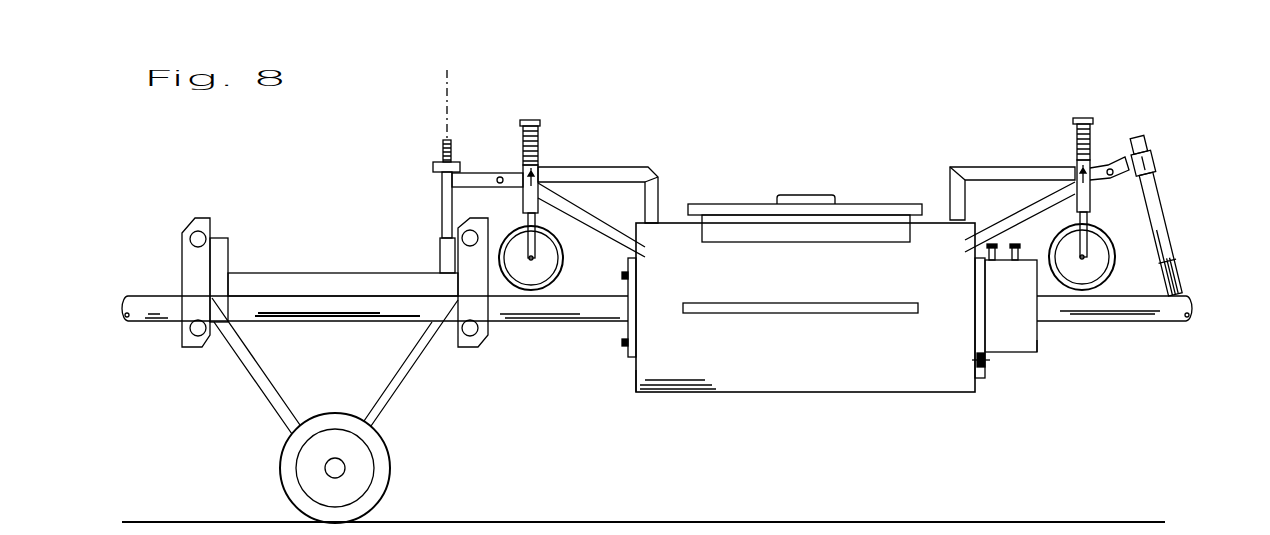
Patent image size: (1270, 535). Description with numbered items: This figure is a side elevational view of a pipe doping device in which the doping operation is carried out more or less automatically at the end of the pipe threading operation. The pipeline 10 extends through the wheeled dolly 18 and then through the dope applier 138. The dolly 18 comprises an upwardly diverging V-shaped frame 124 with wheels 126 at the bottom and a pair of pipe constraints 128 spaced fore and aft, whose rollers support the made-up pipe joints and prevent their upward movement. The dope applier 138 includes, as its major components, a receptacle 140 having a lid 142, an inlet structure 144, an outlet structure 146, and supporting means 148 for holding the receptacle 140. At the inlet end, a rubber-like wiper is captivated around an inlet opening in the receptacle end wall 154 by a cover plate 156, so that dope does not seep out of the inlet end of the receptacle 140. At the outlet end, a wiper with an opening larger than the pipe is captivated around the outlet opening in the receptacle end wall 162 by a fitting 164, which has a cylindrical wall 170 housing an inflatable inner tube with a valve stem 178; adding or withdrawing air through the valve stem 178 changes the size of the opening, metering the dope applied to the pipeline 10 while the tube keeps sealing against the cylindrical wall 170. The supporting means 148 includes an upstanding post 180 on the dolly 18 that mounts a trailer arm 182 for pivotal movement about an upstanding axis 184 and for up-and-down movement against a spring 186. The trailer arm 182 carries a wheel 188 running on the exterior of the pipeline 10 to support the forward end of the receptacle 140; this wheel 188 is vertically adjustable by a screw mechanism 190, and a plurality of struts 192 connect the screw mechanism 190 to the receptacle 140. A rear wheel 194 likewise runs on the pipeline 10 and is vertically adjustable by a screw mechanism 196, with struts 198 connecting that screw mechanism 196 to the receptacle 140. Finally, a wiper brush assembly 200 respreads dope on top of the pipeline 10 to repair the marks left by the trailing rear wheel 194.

The pipeline 10 is at (138, 290).
The wheeled dolly 18 is at (300, 230).
The V-shaped frame 124 is at (250, 385).
The wheels 126 is at (278, 468).
The pipe constraints 128 is at (203, 207).
The dope applier 138 is at (871, 120).
The receptacle 140 is at (753, 385).
The lid 142 is at (746, 203).
The inlet structure 144 is at (620, 347).
The outlet structure 146 is at (1042, 340).
The supporting means 148 is at (676, 128).
The receptacle end wall 154 is at (634, 375).
The cover plate 156 is at (620, 327).
The receptacle end wall 162 is at (983, 385).
The fitting 164 is at (1006, 378).
The cylindrical wall 170 is at (1010, 340).
The valve stem 178 is at (1023, 252).
The upstanding post 180 is at (447, 203).
The trailer arm 182 is at (487, 172).
The upstanding axis 184 is at (450, 92).
The spring 186 is at (436, 152).
The wheel 188 is at (563, 243).
The screw mechanism 190 is at (540, 147).
The struts 192 is at (626, 175).
The rear wheel 194 is at (1113, 250).
The screw mechanism 196 is at (1087, 113).
The struts 198 is at (970, 160).
The wiper brush assembly 200 is at (1173, 248).